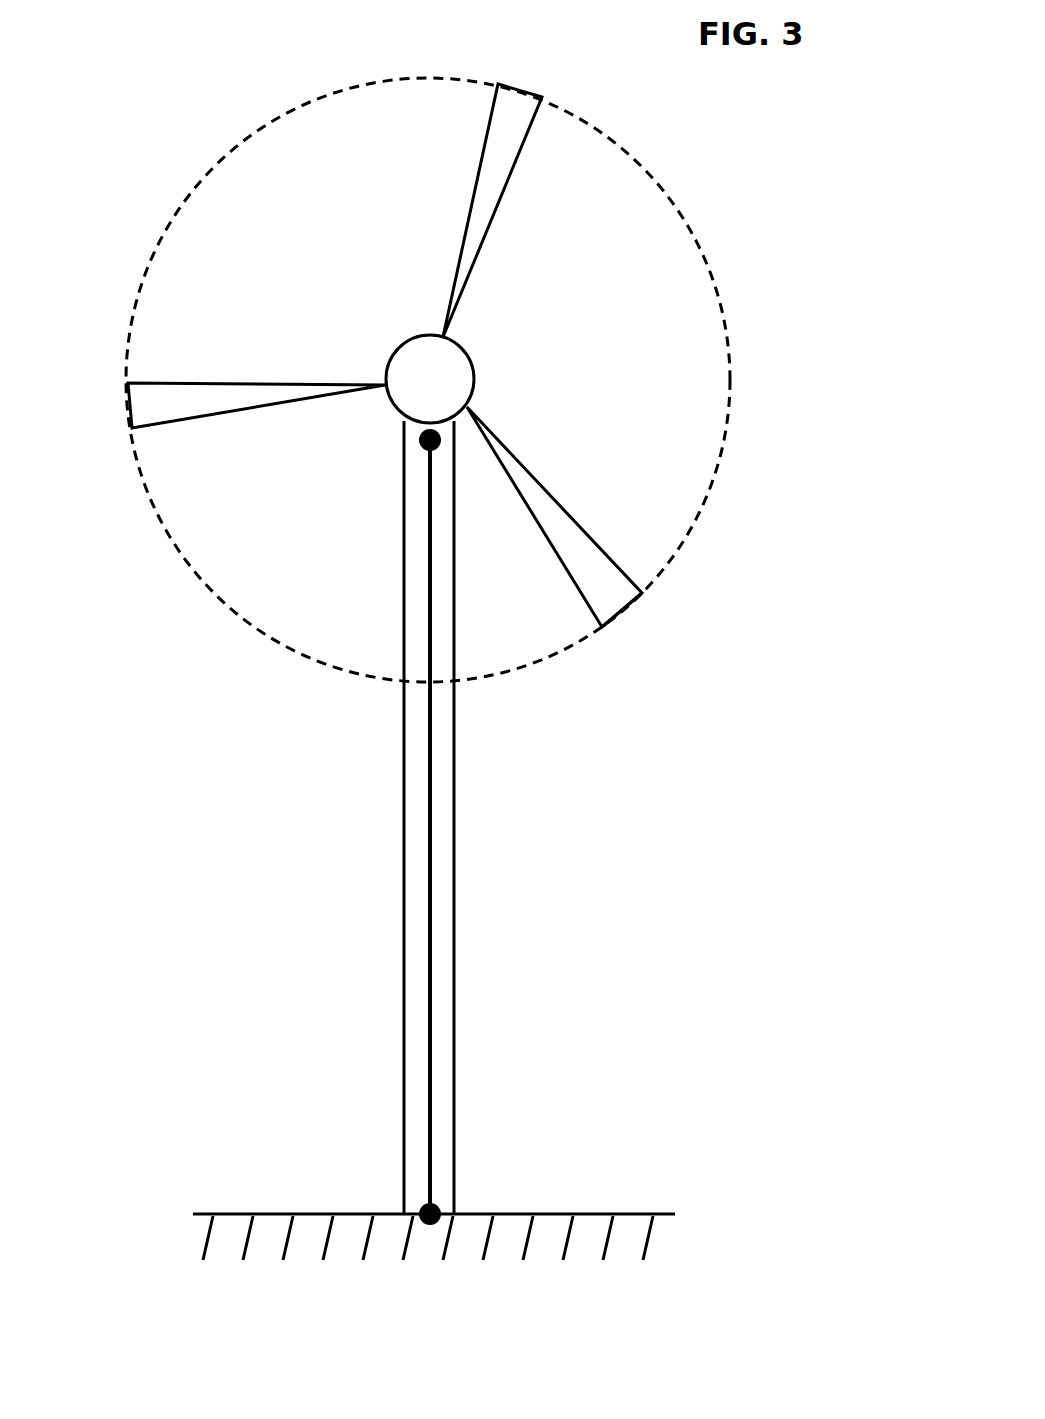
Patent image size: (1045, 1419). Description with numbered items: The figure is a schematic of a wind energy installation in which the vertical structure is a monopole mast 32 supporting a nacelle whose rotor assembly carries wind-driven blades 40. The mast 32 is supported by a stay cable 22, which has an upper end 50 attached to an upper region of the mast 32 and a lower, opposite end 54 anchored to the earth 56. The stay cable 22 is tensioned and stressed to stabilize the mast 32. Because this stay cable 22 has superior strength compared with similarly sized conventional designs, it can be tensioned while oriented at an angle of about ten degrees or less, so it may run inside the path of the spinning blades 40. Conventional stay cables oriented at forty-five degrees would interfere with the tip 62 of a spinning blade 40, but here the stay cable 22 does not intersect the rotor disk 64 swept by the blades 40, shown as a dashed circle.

The stay cable 22 is at (428, 873).
The monopole mast 32 is at (403, 938).
The blade 40 is at (515, 101).
The upper end 50 is at (421, 450).
The lower end 54 is at (423, 1208).
The earth 56 is at (667, 1213).
The tip 62 is at (620, 613).
The rotor disk 64 is at (731, 375).